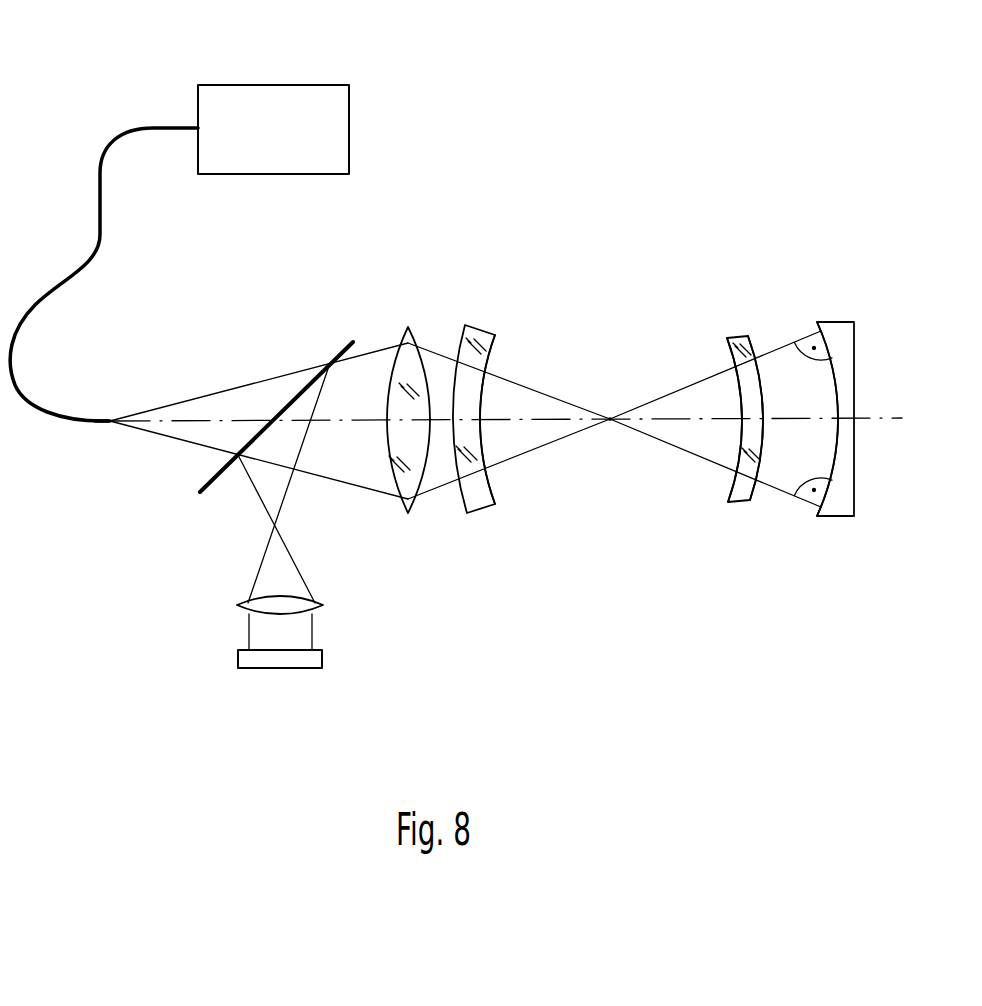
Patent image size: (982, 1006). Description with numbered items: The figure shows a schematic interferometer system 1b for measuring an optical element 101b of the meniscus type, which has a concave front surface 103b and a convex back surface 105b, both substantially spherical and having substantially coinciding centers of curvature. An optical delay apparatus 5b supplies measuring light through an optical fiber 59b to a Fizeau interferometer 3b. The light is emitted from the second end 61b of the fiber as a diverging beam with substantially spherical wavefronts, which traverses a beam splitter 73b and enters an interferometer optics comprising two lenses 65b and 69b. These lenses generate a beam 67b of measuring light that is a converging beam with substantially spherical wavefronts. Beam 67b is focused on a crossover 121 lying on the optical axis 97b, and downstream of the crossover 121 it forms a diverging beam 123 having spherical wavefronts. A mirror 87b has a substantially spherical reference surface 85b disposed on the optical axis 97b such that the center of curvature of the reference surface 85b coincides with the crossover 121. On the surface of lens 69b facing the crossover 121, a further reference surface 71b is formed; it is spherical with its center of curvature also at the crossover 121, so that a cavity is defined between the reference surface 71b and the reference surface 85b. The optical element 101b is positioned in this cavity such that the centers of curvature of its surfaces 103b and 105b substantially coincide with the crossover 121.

The interferometer system 1b is at (658, 168).
The Fizeau interferometer 3b is at (443, 588).
The optical delay apparatus 5b is at (273, 85).
The optical fiber 59b is at (153, 128).
The second end of optical fiber 61b is at (108, 420).
The beam splitter 73b is at (343, 343).
The lens 65b is at (408, 327).
The lens 69b is at (480, 325).
The beam of measuring light 67b is at (537, 390).
The reference surface 71b is at (497, 490).
The crossover 121 is at (610, 423).
The diverging beam 123 is at (698, 452).
The optical element 101b is at (737, 505).
The concave front surface 103b is at (725, 350).
The convex back surface 105b is at (755, 338).
The reference surface 85b is at (815, 325).
The mirror 87b is at (840, 518).
The optical axis 97b is at (882, 413).